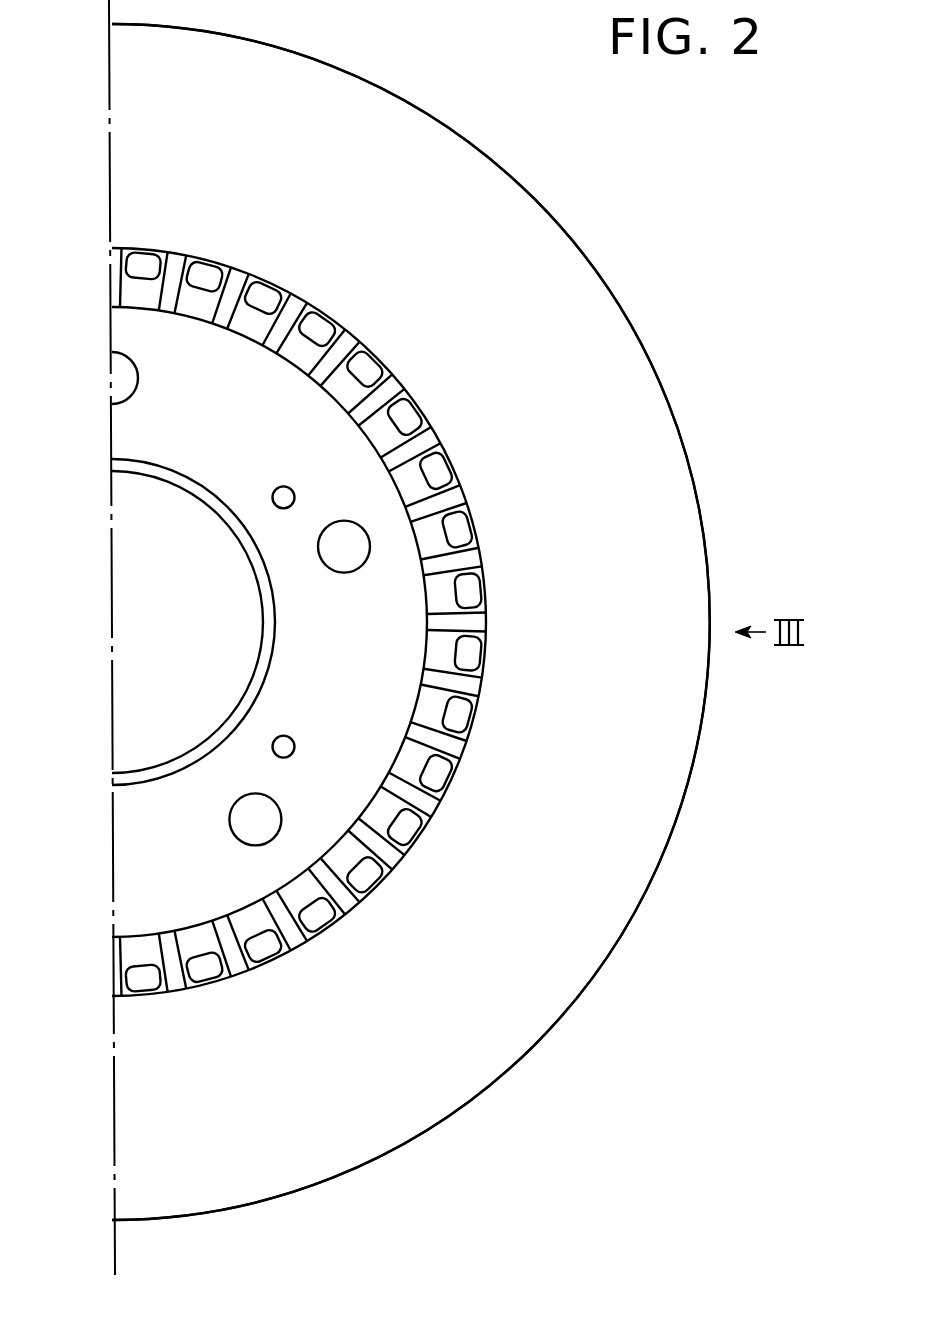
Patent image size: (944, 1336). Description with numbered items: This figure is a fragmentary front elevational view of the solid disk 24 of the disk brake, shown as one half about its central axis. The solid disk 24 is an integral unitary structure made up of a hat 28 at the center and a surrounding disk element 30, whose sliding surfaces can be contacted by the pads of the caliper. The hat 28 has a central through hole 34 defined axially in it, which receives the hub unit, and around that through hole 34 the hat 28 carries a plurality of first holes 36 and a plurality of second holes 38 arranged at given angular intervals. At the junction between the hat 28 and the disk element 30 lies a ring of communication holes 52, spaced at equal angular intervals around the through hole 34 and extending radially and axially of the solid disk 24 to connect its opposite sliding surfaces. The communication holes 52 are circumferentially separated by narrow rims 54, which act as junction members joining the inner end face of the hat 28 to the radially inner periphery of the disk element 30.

The solid disk 24 is at (457, 622).
The hat 28 is at (118, 443).
The disk element 30 is at (678, 751).
The central through hole 34 is at (203, 641).
The first holes 36 is at (310, 469).
The second holes 38 is at (345, 573).
The communication holes 52 is at (424, 762).
The narrow rims 54 is at (365, 904).